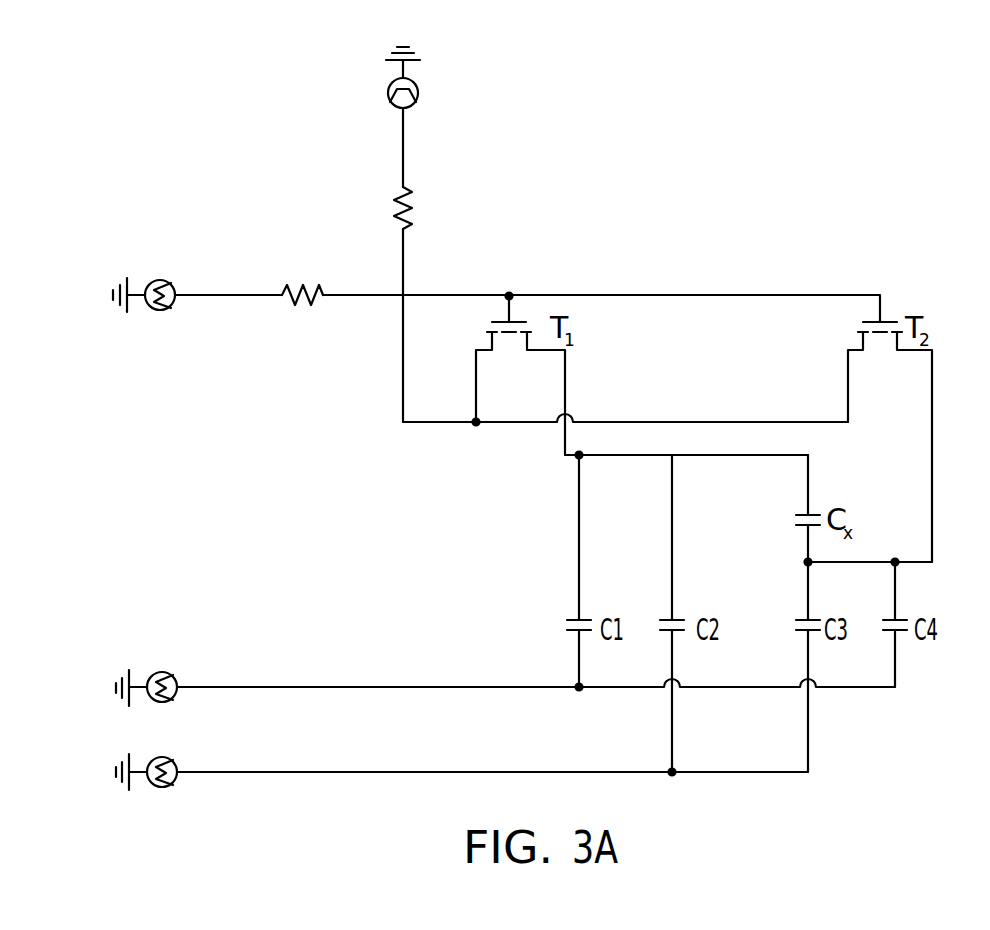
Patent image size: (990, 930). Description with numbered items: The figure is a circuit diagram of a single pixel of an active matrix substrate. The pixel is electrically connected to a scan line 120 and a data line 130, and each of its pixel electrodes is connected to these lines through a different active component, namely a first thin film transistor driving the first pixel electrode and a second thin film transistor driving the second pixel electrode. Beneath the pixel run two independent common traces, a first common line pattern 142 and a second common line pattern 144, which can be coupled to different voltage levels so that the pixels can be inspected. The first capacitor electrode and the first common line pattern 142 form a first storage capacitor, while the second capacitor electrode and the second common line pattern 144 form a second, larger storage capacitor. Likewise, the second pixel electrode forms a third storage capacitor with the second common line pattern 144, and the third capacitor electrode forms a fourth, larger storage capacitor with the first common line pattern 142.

The scan line 120 is at (235, 295).
The data line 130 is at (403, 162).
The first common line pattern 142 is at (286, 687).
The second common line pattern 144 is at (300, 772).